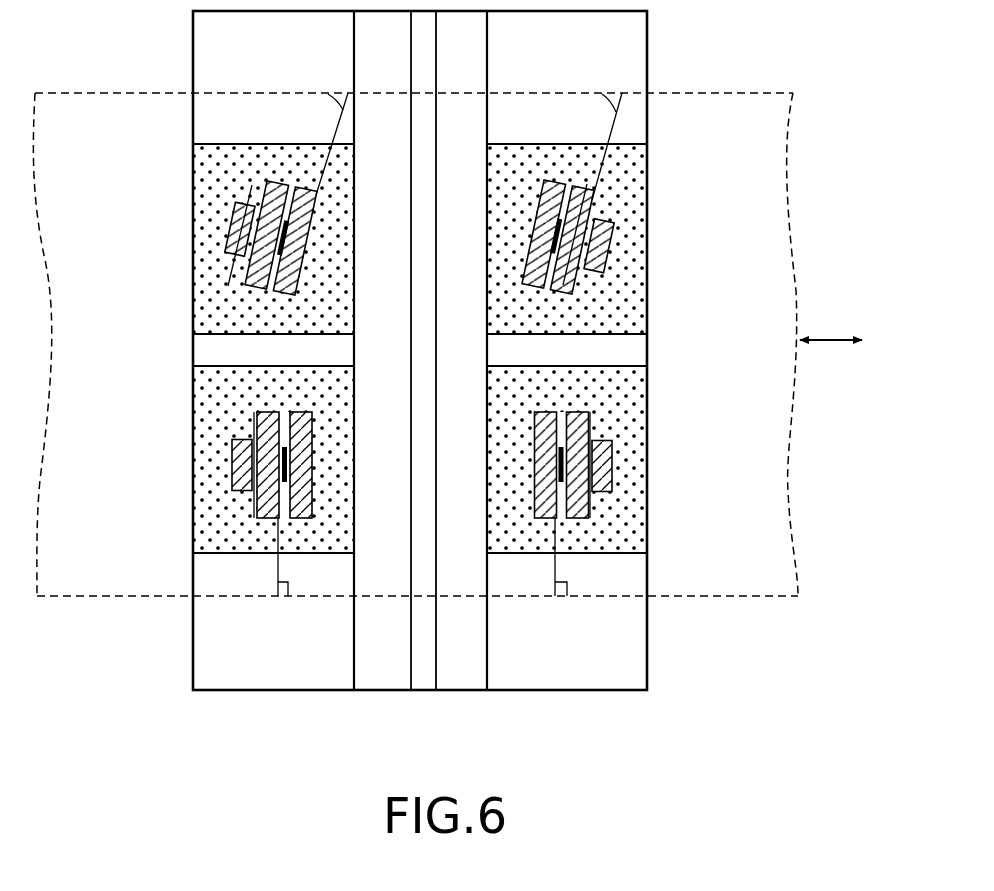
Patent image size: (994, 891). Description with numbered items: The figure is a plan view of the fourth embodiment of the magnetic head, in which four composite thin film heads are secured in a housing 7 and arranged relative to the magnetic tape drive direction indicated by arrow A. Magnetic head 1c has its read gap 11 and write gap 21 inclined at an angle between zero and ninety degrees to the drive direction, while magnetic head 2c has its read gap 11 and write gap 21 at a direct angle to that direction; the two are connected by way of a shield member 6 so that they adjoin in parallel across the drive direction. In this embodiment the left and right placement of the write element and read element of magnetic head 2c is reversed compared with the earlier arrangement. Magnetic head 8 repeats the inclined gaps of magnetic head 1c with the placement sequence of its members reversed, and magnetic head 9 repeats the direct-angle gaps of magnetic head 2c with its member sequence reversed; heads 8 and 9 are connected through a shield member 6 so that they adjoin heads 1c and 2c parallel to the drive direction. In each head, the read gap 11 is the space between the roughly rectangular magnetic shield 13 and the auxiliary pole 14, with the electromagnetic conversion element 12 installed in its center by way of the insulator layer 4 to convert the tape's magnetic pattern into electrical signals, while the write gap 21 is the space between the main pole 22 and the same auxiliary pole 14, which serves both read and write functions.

The magnetic head 1c is at (172, 195).
The magnetic head 2c is at (175, 447).
The insulator layer 4 is at (197, 305).
The shield member 6 is at (423, 680).
The housing 7 is at (197, 44).
The composite thin film magnetic head 8 is at (572, 137).
The composite thin film magnetic head 9 is at (541, 556).
The read gap 11 is at (293, 190).
The electromagnetic conversion element 12 is at (270, 295).
The magnetic shield 13 is at (313, 200).
The auxiliary pole 14 is at (272, 183).
The write gap 21 is at (260, 200).
The main pole 22 is at (232, 230).
The arrow A is at (831, 326).